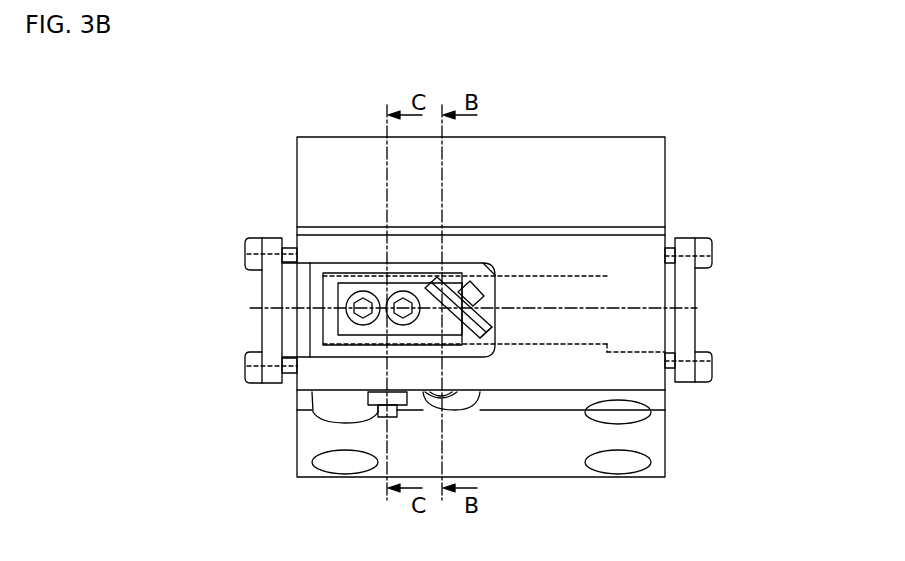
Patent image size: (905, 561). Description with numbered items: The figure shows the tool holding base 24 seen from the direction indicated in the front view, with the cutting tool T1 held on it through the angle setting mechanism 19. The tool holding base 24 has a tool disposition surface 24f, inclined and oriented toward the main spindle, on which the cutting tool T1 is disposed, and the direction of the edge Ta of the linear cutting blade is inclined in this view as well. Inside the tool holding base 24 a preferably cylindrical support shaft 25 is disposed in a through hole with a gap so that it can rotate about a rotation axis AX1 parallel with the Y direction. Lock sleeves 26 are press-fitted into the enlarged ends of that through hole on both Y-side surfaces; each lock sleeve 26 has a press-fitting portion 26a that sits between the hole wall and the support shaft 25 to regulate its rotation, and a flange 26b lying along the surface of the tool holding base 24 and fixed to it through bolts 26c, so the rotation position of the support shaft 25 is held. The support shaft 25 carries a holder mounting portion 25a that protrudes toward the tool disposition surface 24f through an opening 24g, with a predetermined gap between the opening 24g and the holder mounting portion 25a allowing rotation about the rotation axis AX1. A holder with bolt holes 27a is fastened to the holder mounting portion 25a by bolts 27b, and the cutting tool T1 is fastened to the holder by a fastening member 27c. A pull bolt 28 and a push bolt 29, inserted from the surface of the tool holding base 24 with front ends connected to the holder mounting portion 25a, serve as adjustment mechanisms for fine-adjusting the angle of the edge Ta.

The angle setting mechanism 19 is at (238, 424).
The tool holding base 24 is at (658, 152).
The tool disposition surface 24f is at (612, 248).
The opening 24g is at (487, 295).
The support shaft 25 is at (290, 275).
The holder mounting portion 25a is at (335, 283).
The lock sleeve 26 is at (482, 280).
The press-fitting portion 26a is at (272, 240).
The flange 26b is at (277, 238).
The bolts 26c is at (245, 253).
The bolt holes 27a is at (350, 318).
The bolts 27b is at (348, 302).
The fastening member 27c is at (460, 290).
The pull bolt 28 is at (437, 403).
The push bolt 29 is at (383, 418).
The rotation axis AX1 is at (250, 308).
The edge Ta is at (492, 325).
The cutting tool T1 is at (467, 337).